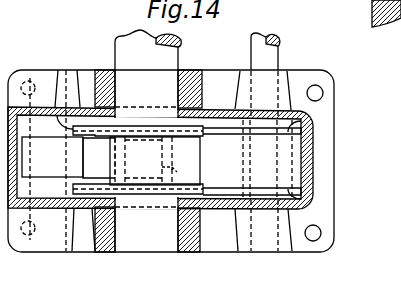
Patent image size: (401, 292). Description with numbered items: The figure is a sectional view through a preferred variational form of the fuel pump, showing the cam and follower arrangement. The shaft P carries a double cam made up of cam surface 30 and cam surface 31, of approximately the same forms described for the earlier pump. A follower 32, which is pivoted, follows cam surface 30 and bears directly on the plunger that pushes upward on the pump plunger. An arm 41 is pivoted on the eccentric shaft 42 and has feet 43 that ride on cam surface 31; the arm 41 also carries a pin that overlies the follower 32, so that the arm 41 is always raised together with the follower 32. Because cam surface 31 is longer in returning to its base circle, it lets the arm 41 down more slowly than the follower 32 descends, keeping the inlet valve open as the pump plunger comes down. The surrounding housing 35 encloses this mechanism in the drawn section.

The shaft P is at (148, 140).
The cam surface 30 is at (82, 161).
The cam surface 31 is at (58, 70).
The follower 32 is at (172, 183).
The housing 35 is at (316, 169).
The arm 41 is at (170, 161).
The eccentric shaft 42 is at (273, 63).
The feet 43 is at (140, 126).